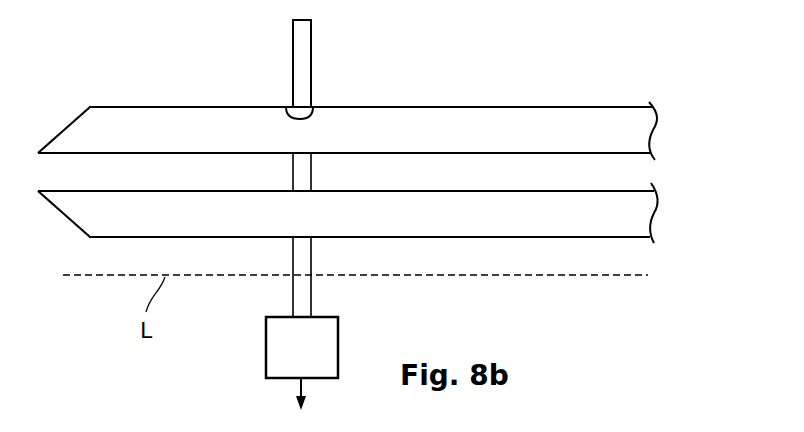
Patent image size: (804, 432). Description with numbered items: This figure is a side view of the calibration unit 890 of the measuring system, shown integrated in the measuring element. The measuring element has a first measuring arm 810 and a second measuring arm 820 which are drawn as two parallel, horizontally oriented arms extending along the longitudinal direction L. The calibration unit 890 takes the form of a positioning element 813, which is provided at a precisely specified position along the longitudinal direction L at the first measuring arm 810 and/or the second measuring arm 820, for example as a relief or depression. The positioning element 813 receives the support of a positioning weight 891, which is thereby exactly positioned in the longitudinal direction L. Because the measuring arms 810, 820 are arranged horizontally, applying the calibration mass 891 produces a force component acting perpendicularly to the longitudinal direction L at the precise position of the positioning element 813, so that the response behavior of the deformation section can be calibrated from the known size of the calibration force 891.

The first measuring arm 810 is at (485, 98).
The second measuring arm 820 is at (670, 213).
The positioning element 813 is at (313, 108).
The calibration unit 890 is at (207, 58).
The positioning weight 891 is at (265, 338).